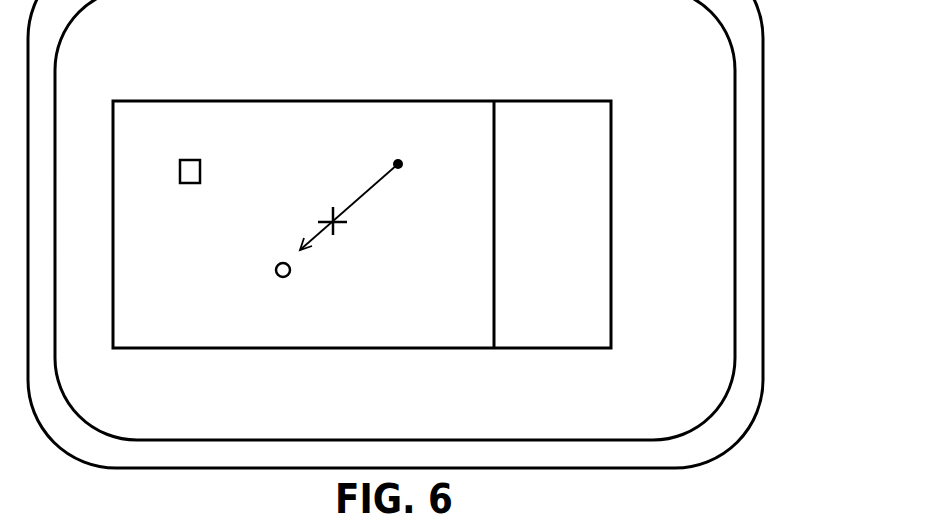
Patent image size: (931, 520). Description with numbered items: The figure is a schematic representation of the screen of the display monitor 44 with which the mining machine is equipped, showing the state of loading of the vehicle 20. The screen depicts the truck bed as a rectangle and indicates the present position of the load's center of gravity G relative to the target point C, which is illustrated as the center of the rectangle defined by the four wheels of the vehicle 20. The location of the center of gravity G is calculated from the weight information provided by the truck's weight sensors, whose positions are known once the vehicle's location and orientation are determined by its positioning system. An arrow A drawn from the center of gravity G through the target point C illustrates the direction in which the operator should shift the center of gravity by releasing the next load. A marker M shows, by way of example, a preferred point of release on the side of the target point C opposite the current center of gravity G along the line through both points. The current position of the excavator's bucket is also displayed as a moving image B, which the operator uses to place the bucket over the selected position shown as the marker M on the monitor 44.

The vehicle 20 is at (478, 101).
The display monitor 44 is at (757, 192).
The arrow A is at (357, 194).
The moving image B is at (190, 184).
The target point C is at (341, 227).
The center of gravity G is at (403, 165).
The marker M is at (290, 274).